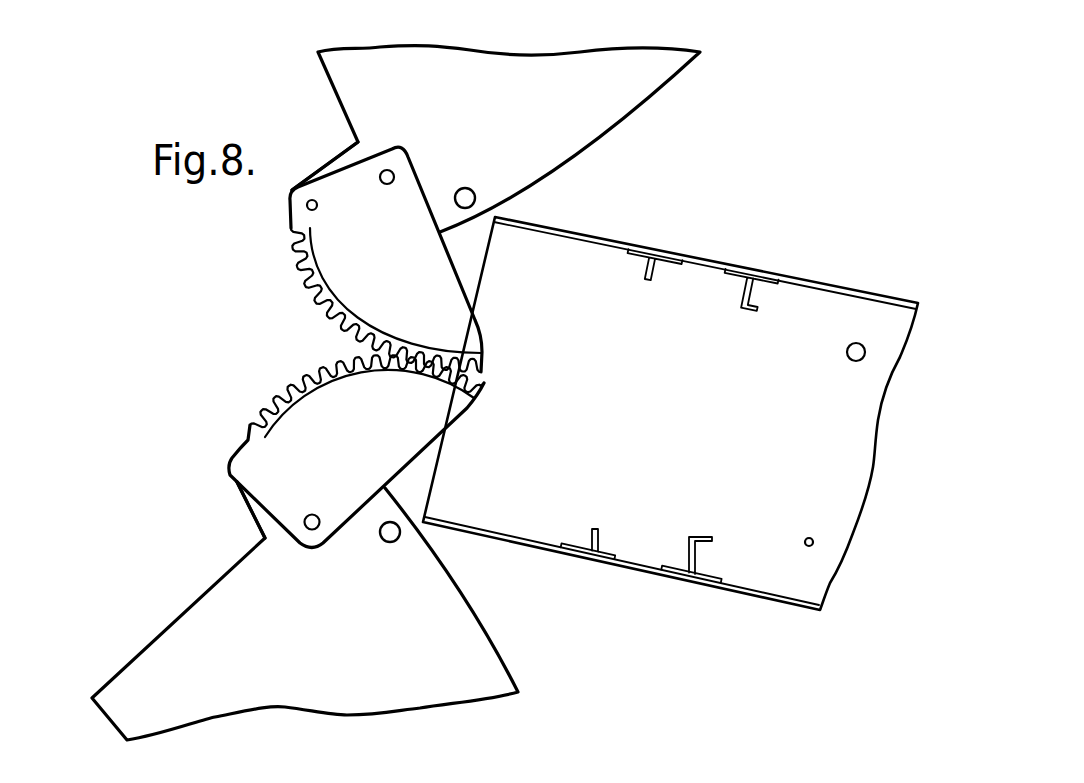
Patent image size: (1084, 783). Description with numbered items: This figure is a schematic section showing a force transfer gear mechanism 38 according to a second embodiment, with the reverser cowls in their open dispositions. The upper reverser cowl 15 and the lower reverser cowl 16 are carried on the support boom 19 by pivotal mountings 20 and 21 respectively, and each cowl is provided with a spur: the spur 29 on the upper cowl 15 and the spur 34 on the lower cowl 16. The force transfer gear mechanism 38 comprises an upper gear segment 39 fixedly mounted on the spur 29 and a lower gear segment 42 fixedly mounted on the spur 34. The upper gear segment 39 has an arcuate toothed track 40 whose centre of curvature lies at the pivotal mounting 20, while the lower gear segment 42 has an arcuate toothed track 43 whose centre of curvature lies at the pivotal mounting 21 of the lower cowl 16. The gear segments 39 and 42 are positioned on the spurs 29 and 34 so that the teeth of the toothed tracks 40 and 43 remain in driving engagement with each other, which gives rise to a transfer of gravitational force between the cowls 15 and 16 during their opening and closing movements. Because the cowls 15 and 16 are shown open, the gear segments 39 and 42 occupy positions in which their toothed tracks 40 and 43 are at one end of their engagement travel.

The upper reverser cowl 15 is at (583, 118).
The lower reverser cowl 16 is at (453, 637).
The support boom 19 is at (692, 257).
The pivotal mounting 20 is at (465, 198).
The pivotal mounting 21 is at (390, 532).
The spur 29 is at (332, 155).
The spur 34 is at (246, 525).
The force transfer gear mechanism 38 is at (228, 337).
The upper gear segment 39 is at (445, 328).
The arcuate toothed track 40 is at (310, 290).
The lower gear segment 42 is at (413, 427).
The arcuate toothed track 43 is at (303, 383).